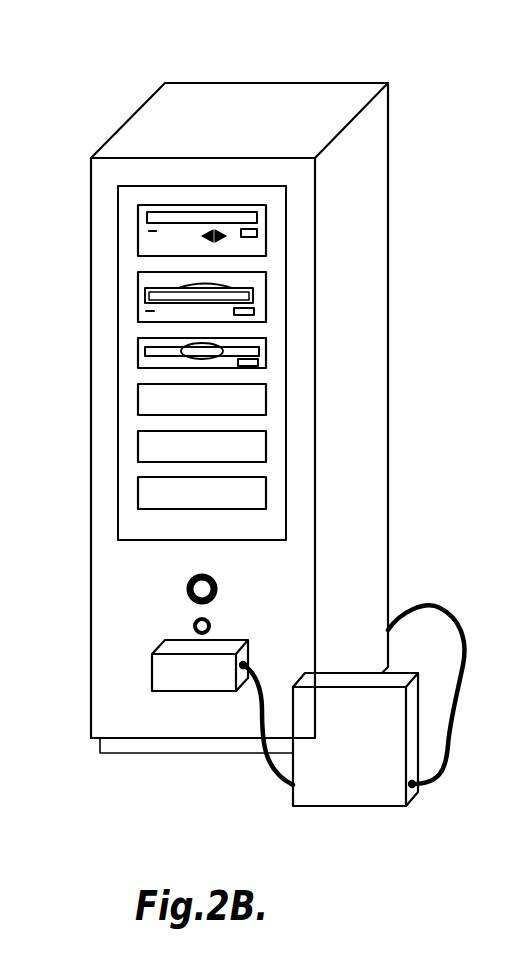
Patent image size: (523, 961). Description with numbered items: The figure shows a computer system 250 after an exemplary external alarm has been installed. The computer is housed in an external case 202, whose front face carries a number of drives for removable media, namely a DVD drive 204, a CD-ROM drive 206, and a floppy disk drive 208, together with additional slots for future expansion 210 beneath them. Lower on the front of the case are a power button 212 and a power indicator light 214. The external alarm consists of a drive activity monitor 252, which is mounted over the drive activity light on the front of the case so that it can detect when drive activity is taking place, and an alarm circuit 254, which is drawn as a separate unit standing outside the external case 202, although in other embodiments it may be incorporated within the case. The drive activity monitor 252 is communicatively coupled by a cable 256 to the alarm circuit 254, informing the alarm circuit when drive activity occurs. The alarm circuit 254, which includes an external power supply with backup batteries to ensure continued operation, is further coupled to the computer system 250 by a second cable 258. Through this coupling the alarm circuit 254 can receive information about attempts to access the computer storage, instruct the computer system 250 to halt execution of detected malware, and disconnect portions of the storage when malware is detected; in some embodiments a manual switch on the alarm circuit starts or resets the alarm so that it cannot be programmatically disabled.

The computer system 250 is at (112, 60).
The external case 202 is at (91, 190).
The DVD drive 204 is at (138, 243).
The CD-ROM drive 206 is at (138, 303).
The floppy disk drive 208 is at (138, 352).
The additional slots for future expansion 210 is at (138, 398).
The power button 212 is at (188, 590).
The power indicator light 214 is at (193, 627).
The drive activity monitor 252 is at (172, 692).
The alarm circuit 254 is at (388, 806).
The cable 256 is at (262, 765).
The cable 258 is at (433, 605).